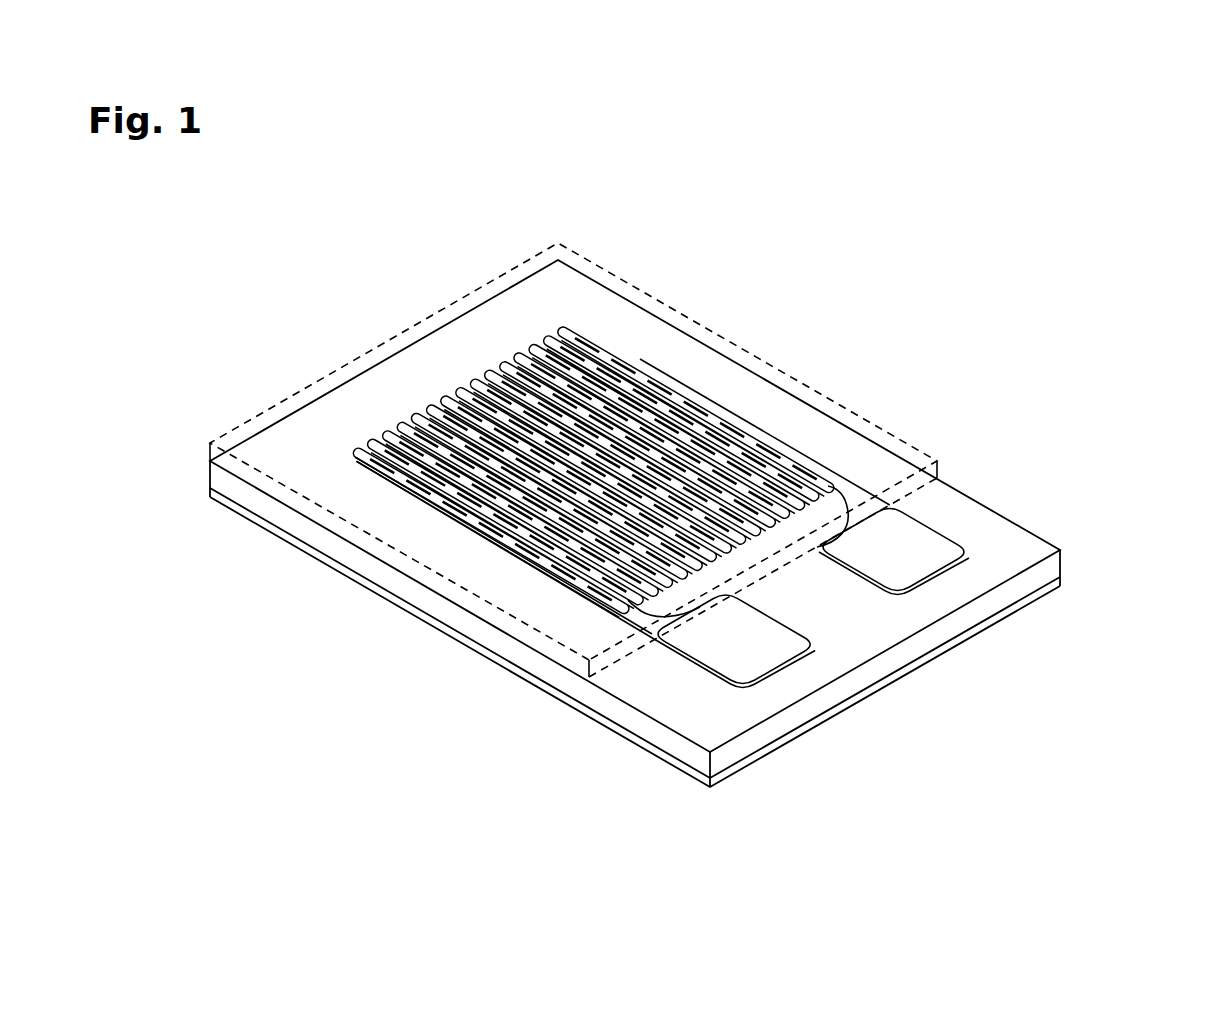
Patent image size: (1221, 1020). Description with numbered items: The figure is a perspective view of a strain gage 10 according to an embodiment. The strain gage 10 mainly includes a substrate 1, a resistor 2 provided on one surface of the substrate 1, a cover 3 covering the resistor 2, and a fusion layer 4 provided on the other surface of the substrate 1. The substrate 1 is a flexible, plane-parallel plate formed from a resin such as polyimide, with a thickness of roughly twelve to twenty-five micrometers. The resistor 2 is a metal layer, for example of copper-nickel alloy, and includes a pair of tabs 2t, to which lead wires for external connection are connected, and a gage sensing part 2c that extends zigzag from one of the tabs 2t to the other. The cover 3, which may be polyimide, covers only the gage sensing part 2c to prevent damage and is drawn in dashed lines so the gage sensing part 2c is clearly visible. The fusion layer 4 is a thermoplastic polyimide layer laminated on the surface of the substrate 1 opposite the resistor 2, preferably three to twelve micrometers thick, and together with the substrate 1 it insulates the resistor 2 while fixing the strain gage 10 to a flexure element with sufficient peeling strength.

The strain gage 10 is at (313, 332).
The substrate 1 is at (1043, 573).
The resistor 2 is at (452, 557).
The gage sensing part 2c is at (574, 333).
The tabs 2t is at (921, 548).
The cover 3 is at (744, 346).
The fusion layer 4 is at (1035, 597).